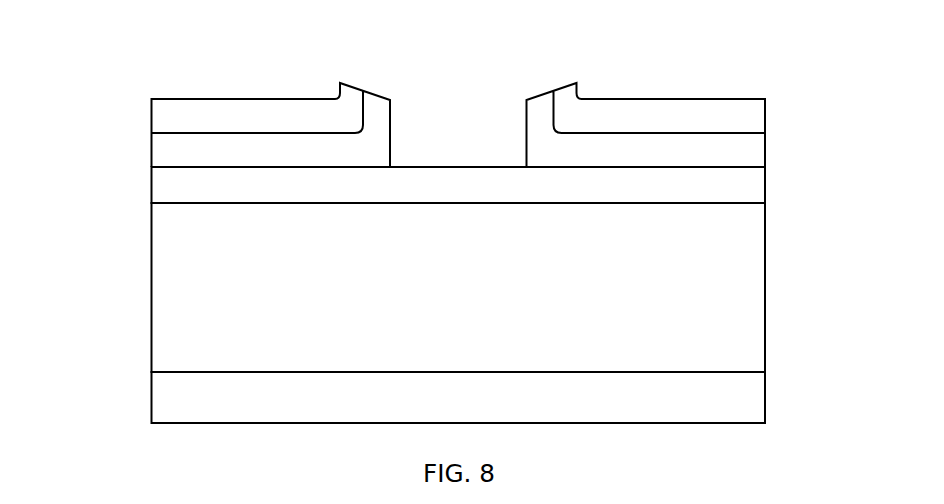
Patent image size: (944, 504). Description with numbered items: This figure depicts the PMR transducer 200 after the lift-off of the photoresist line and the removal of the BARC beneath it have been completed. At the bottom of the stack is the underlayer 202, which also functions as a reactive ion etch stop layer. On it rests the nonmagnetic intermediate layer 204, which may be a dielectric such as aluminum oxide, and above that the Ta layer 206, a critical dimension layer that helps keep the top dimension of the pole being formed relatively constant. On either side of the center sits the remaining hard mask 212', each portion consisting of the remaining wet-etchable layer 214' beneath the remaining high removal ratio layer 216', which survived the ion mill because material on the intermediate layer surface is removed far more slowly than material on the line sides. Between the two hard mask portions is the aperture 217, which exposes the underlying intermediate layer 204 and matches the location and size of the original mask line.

The PMR transducer 200 is at (480, 28).
The underlayer 202 is at (765, 410).
The intermediate layer 204 is at (152, 298).
The Ta layer 206 is at (765, 195).
The hard mask 212' is at (470, 113).
The remaining portion of the wet-etchable layer 214' is at (441, 142).
The remaining portion of the high removal ratio layer 216' is at (457, 80).
The aperture 217 is at (461, 100).